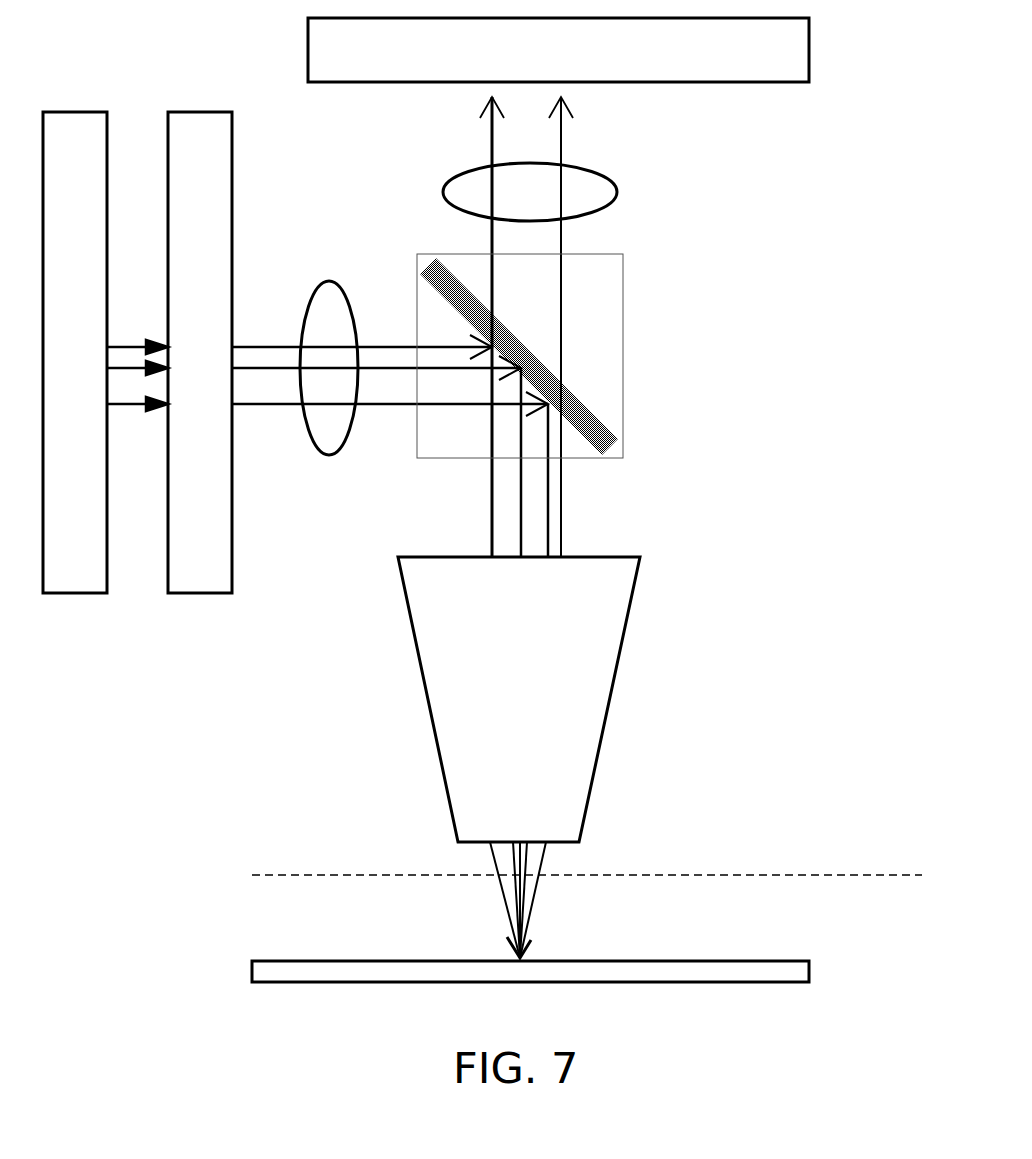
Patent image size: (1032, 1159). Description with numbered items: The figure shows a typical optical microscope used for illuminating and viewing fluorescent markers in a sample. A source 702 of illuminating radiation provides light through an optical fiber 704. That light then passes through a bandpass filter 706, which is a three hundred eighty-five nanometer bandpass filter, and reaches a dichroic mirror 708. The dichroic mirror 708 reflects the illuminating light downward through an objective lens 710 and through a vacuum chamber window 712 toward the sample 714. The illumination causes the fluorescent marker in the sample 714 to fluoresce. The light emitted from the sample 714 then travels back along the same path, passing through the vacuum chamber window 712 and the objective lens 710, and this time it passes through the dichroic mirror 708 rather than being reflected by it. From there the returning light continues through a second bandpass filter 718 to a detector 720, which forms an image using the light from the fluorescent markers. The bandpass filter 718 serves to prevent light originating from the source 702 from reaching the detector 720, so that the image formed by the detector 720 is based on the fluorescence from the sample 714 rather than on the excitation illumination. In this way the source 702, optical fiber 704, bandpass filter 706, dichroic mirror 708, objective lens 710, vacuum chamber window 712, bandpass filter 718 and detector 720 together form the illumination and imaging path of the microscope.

The source 702 is at (78, 593).
The optical fiber 704 is at (204, 593).
The bandpass filter 706 is at (341, 450).
The dichroic mirror 708 is at (600, 420).
The objective lens 710 is at (637, 586).
The vacuum chamber window 712 is at (630, 875).
The sample 714 is at (567, 958).
The bandpass filter 718 is at (593, 168).
The detector 720 is at (809, 38).